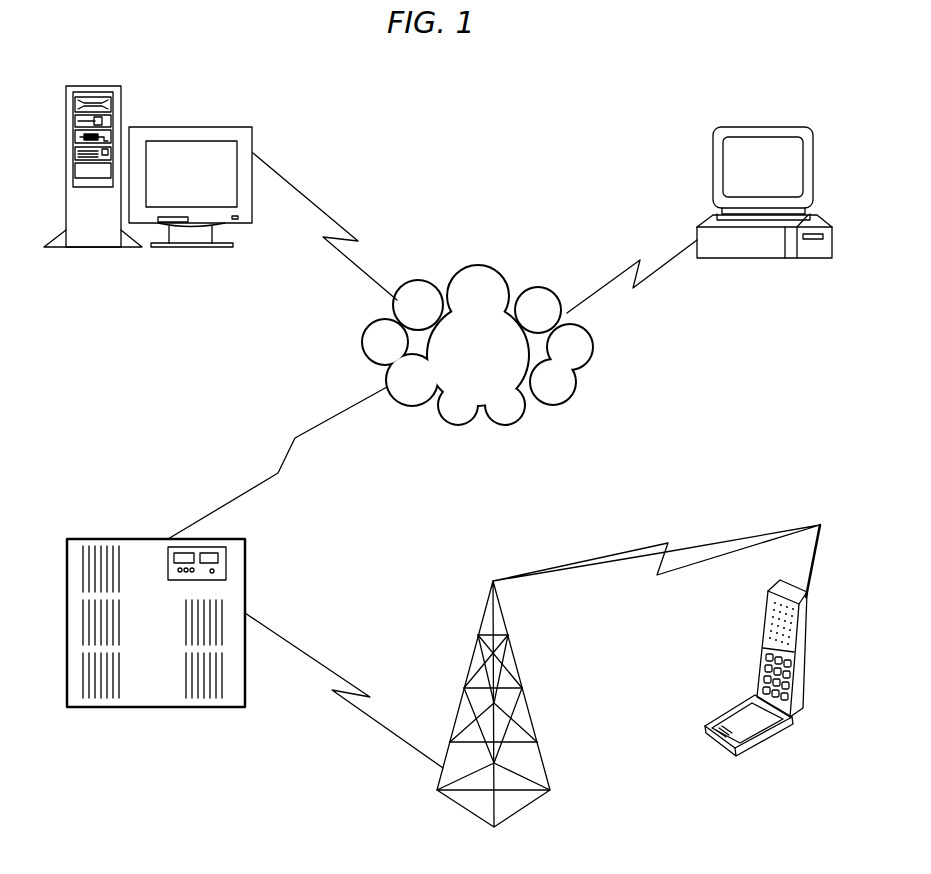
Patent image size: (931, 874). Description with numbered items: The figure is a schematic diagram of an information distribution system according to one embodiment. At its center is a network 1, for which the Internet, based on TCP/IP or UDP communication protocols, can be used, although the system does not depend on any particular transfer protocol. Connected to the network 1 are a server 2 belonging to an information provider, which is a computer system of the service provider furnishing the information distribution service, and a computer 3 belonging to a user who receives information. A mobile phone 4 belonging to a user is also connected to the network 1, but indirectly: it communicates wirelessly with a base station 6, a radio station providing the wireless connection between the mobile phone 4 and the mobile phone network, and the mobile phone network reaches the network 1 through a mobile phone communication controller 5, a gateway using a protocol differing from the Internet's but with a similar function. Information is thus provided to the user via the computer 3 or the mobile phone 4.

The network 1 is at (476, 282).
The server 2 is at (186, 127).
The computer 3 is at (713, 163).
The mobile phone 4 is at (808, 638).
The mobile phone communication controller 5 is at (245, 570).
The base station 6 is at (528, 708).